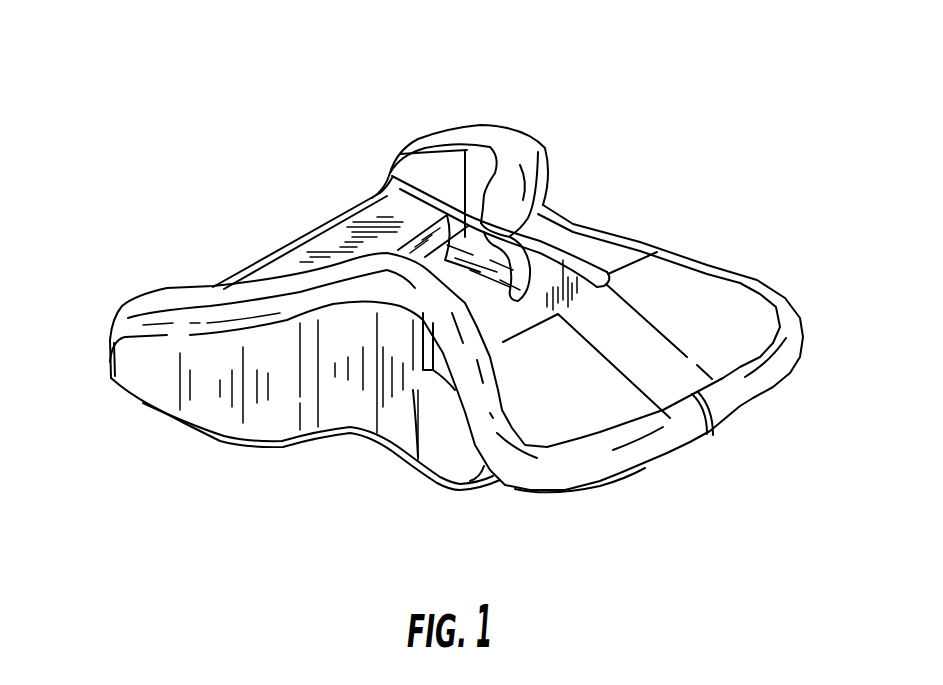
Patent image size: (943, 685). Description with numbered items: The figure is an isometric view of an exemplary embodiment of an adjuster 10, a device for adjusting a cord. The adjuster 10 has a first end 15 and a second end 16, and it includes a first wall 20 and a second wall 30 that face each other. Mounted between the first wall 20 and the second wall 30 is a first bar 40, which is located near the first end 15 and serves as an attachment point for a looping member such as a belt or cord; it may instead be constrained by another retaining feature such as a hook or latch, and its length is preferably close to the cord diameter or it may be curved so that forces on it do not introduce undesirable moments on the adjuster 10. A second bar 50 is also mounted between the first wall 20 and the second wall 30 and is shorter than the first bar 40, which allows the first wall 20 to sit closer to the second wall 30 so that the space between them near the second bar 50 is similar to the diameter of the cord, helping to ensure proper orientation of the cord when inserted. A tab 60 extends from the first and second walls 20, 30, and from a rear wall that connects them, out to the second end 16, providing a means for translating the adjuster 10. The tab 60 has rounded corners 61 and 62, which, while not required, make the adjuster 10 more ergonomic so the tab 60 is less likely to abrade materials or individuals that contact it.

The adjuster 10 is at (297, 541).
The first end 15 is at (247, 263).
The second end 16 is at (748, 399).
The first wall 20 is at (523, 127).
The second wall 30 is at (147, 380).
The first bar 40 is at (323, 240).
The second bar 50 is at (543, 210).
The tab 60 is at (683, 273).
The rounded corner 61 is at (520, 490).
The rounded corner 62 is at (803, 320).